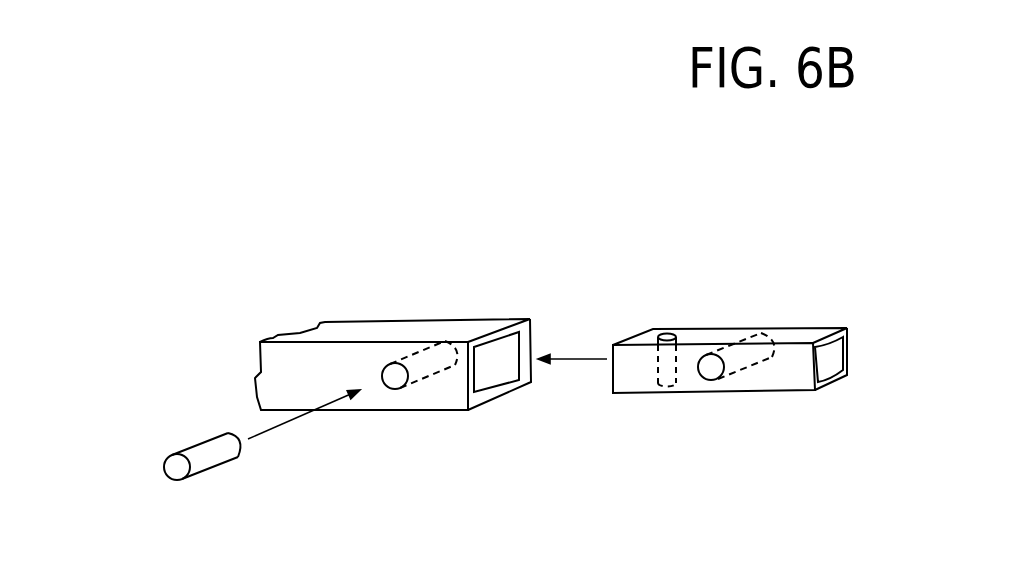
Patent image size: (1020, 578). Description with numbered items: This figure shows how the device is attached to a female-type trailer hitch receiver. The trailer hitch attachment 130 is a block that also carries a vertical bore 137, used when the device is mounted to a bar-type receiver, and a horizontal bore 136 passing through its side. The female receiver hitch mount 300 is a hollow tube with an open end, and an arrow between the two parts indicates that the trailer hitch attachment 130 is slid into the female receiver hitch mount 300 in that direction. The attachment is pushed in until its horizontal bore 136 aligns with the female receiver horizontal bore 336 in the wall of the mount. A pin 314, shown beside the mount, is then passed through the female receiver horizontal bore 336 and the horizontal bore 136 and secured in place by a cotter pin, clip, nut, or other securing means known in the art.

The trailer hitch attachment 130 is at (803, 303).
The horizontal bore 136 is at (714, 380).
The vertical bore 137 is at (664, 333).
The female receiver hitch mount 300 is at (456, 439).
The pin 314 is at (192, 451).
The female receiver horizontal bore 336 is at (391, 369).